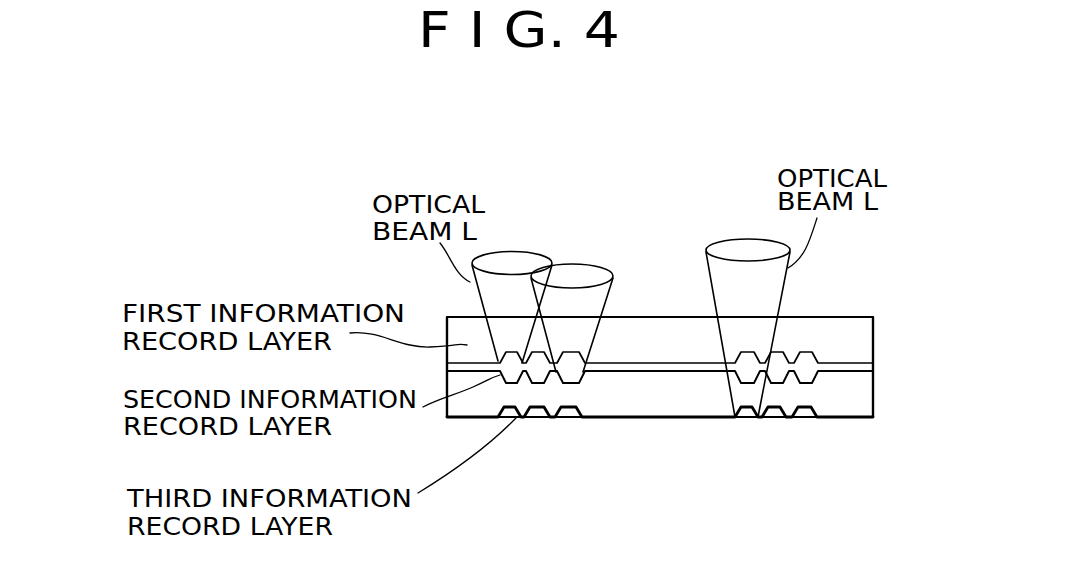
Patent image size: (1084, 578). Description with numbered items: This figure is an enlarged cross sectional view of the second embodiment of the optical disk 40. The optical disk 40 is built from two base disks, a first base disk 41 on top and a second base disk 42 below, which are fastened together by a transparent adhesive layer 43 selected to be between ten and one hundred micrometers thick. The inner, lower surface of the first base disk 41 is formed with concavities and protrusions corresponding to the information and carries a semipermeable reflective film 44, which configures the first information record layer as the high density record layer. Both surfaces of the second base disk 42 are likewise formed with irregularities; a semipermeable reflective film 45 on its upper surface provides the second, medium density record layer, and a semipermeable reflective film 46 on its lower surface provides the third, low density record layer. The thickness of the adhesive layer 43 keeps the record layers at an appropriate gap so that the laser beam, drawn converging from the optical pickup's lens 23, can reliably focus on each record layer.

The objective lens (optical beam L) 23 is at (547, 253).
The optical disk 40 is at (847, 284).
The first base disk 41 is at (858, 333).
The second base disk 42 is at (857, 400).
The transparent adhesive layer 43 is at (866, 367).
The semipermeable reflective film 44 is at (670, 362).
The semipermeable reflective film 45 is at (690, 368).
The semipermeable reflective film 46 is at (650, 417).